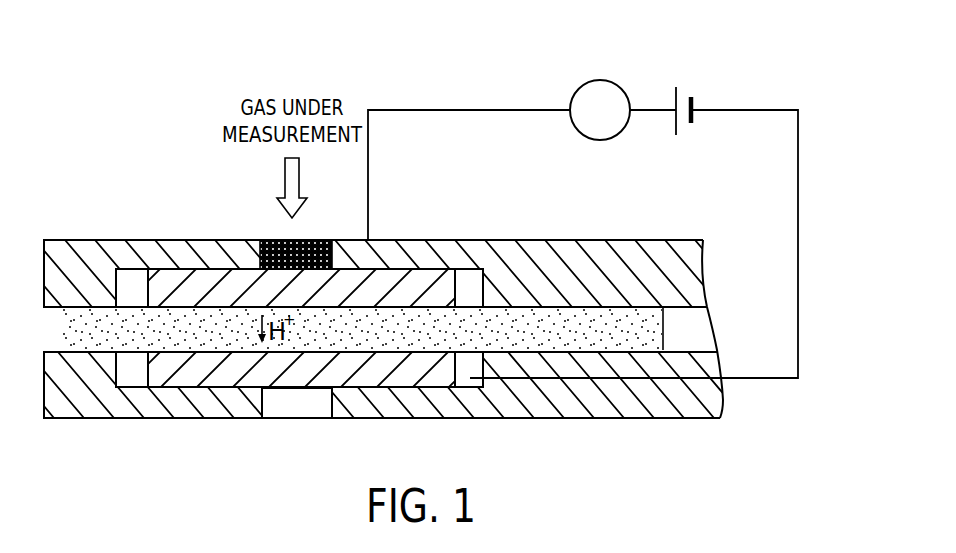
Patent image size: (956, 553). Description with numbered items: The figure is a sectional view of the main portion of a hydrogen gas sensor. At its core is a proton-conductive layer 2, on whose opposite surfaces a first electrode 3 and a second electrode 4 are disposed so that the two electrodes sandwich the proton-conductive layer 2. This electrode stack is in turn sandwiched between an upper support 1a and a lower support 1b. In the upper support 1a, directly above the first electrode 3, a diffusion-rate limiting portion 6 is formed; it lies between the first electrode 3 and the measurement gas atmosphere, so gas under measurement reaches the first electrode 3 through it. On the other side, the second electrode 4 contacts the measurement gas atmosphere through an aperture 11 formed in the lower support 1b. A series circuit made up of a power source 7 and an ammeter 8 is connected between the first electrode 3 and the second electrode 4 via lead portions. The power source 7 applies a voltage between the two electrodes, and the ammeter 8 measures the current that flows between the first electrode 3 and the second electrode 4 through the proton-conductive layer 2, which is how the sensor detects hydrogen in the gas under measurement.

The upper support 1a is at (85, 248).
The lower support 1b is at (78, 405).
The proton-conductive layer 2 is at (245, 345).
The first electrode 3 is at (420, 262).
The second electrode 4 is at (405, 373).
The diffusion-rate limiting portion 6 is at (271, 238).
The power source 7 is at (683, 78).
The ammeter 8 is at (600, 80).
The aperture 11 is at (297, 408).